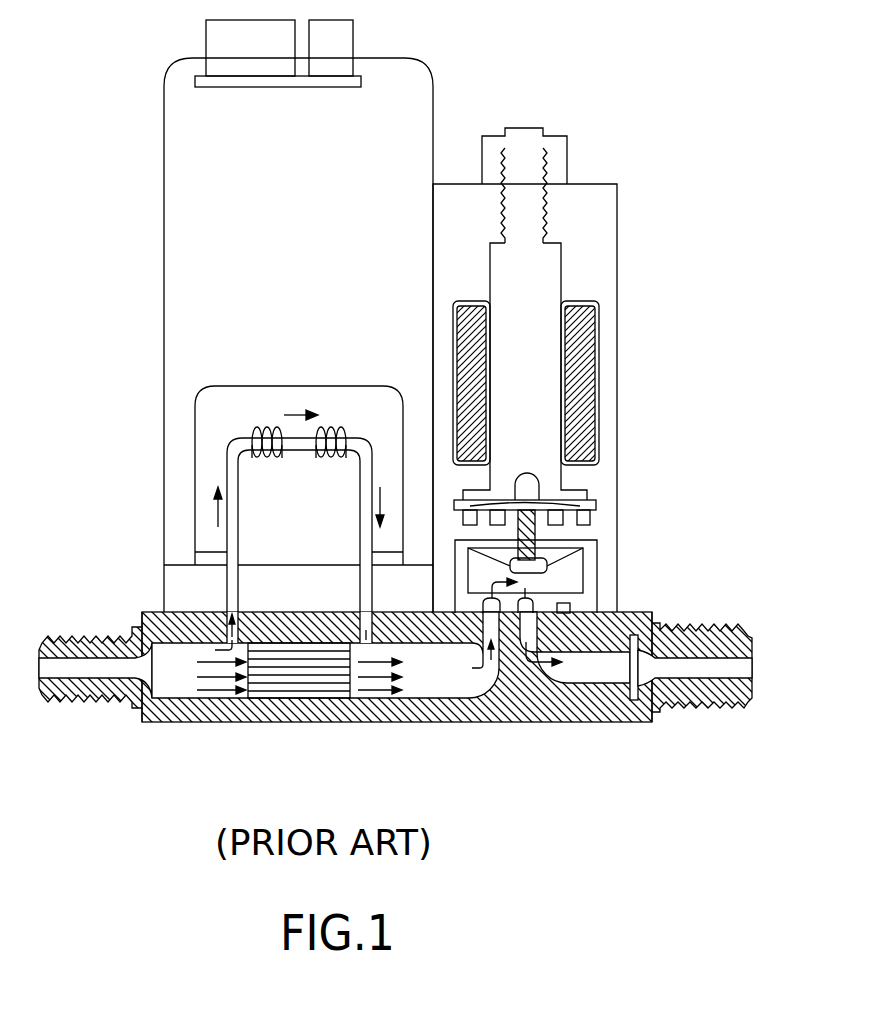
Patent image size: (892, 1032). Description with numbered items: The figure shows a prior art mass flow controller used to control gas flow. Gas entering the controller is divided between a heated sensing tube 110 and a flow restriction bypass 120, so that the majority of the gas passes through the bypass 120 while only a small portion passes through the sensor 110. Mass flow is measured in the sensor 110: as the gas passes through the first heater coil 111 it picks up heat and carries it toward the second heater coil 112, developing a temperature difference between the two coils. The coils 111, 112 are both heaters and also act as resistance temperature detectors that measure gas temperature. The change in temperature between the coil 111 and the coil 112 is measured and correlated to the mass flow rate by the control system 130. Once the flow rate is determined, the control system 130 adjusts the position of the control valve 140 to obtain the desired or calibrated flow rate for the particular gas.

The heated sensing tube 110 is at (240, 505).
The heater coil 111 is at (272, 424).
The heater coil 112 is at (330, 424).
The flow restriction bypass 120 is at (298, 686).
The control system 130 is at (264, 230).
The control valve 140 is at (609, 489).